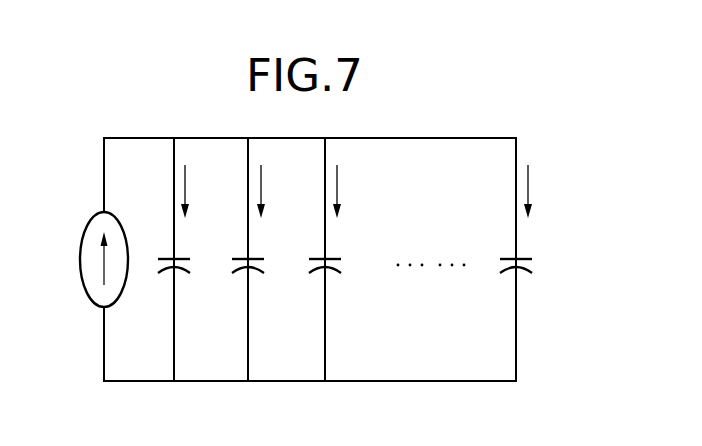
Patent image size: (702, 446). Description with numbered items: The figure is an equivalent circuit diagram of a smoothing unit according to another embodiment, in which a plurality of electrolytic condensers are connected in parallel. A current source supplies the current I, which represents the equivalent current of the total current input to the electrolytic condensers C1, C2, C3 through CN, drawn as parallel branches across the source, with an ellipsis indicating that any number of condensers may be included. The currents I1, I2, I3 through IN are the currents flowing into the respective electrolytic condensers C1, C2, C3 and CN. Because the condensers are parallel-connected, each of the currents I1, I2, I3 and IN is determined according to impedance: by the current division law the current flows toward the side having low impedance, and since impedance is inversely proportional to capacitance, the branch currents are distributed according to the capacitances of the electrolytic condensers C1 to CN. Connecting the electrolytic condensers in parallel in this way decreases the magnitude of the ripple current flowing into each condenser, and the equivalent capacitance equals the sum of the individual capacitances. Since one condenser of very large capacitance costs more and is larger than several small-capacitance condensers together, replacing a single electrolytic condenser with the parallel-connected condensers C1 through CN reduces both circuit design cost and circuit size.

The current I is at (98, 259).
The electrolytic condenser C1 is at (183, 279).
The electrolytic condenser C2 is at (257, 279).
The electrolytic condenser C3 is at (334, 279).
The electrolytic condenser CN is at (525, 279).
The current I1 is at (193, 191).
The current I2 is at (269, 191).
The current I3 is at (345, 191).
The current IN is at (536, 191).